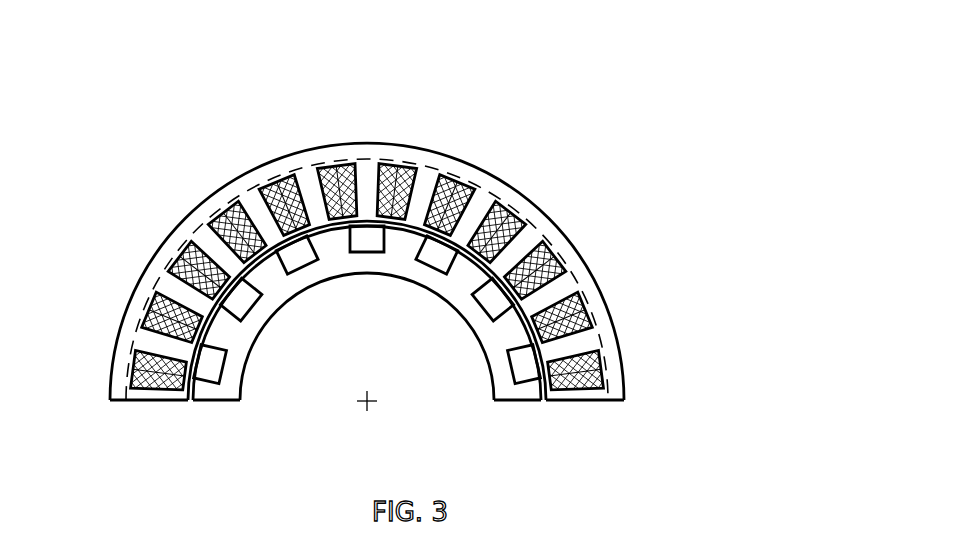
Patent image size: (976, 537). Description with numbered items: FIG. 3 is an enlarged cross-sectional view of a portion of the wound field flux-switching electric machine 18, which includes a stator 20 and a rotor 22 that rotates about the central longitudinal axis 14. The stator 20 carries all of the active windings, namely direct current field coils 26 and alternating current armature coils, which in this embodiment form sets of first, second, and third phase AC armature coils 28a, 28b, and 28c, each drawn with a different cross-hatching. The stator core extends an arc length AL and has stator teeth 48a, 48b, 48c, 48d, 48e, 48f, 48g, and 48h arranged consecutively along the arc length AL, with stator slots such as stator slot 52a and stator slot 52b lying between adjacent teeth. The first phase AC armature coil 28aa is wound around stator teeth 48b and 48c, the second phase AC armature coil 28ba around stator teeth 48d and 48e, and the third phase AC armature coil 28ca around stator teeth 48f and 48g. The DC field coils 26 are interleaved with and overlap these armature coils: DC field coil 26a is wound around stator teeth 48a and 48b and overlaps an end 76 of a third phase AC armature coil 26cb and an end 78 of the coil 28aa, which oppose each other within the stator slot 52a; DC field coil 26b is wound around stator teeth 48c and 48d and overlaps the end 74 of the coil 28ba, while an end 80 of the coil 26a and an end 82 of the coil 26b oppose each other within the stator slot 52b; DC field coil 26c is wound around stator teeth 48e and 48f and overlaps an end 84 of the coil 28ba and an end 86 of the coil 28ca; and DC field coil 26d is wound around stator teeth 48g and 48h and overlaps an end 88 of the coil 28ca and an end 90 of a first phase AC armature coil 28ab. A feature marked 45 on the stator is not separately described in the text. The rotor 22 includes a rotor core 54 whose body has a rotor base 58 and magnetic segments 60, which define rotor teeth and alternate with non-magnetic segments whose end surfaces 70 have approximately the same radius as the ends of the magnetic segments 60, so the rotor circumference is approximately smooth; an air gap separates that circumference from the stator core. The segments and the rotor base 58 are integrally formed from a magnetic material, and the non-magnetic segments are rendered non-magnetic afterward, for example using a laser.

The central longitudinal axis 14 is at (362, 408).
The wound field flux-switching electric machine 18 is at (576, 54).
The stator 20 is at (612, 404).
The rotor 22 is at (508, 404).
The DC field coils 26 is at (128, 348).
The DC field coil 26a is at (197, 216).
The DC field coil 26b is at (318, 172).
The DC field coil 26c is at (345, 166).
The third phase AC armature coil 26cb is at (150, 272).
The DC field coil 26d is at (490, 176).
The first phase AC armature coil 28a is at (590, 296).
The first phase AC armature coil 28aa is at (262, 162).
The first phase AC armature coil 28ab is at (525, 232).
The second phase AC armature coil 28b is at (592, 322).
The second phase AC armature coil 28ba is at (280, 178).
The third phase AC armature coil 28c is at (176, 396).
The third phase AC armature coil 28ca is at (405, 168).
The stator tooth 45 is at (606, 356).
The stator tooth 48a is at (240, 394).
The stator tooth 48b is at (170, 236).
The stator tooth 48c is at (236, 175).
The stator tooth 48d is at (300, 164).
The stator tooth 48e is at (372, 170).
The stator tooth 48f is at (440, 172).
The stator tooth 48g is at (398, 237).
The stator tooth 48h is at (575, 252).
The stator slot 52a is at (132, 292).
The stator slot 52b is at (282, 352).
The rotor core 54 is at (263, 250).
The rotor base 58 is at (216, 405).
The magnetic segments 60 is at (503, 332).
The end surfaces of non-magnetic segments 70 is at (300, 266).
The end of AC armature coil 28ba 74 is at (273, 168).
The end of AC armature coil 26cb 76 is at (178, 257).
The end of AC armature coil 28aa 78 is at (246, 332).
The end of DC field coil 26a 80 is at (216, 211).
The end of DC field coil 26b 82 is at (280, 262).
The end of AC armature coil 28ba 84 is at (379, 231).
The end of AC armature coil 28ca 86 is at (396, 231).
The end of AC armature coil 28ca 88 is at (469, 265).
The end of AC armature coil 28ab 90 is at (570, 233).
The arc length AL is at (418, 160).